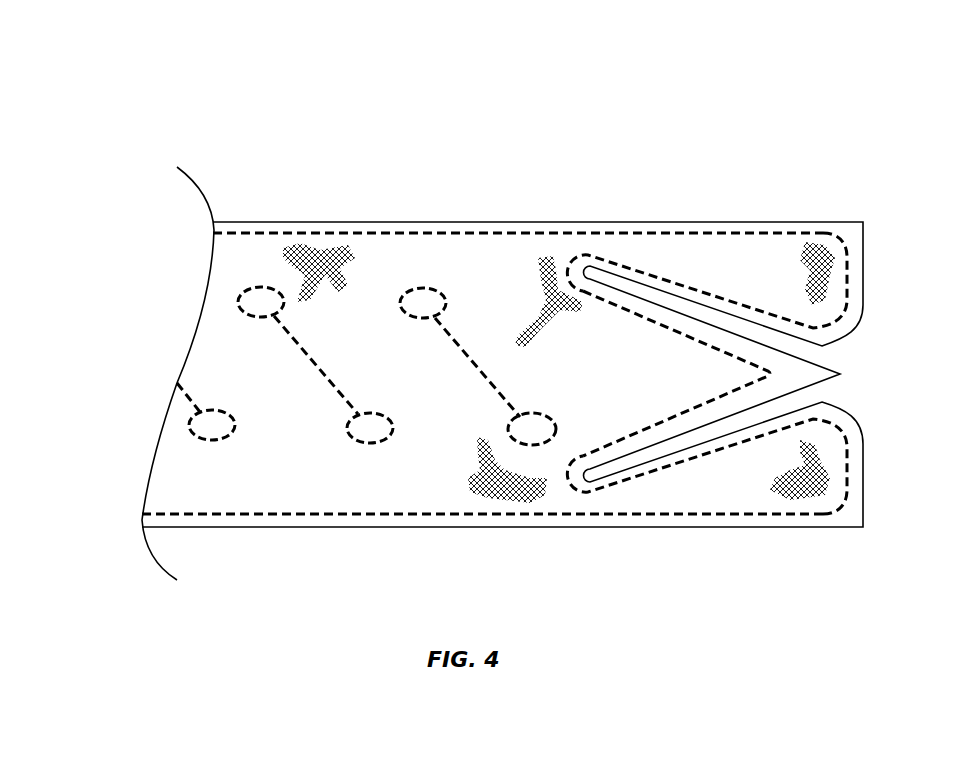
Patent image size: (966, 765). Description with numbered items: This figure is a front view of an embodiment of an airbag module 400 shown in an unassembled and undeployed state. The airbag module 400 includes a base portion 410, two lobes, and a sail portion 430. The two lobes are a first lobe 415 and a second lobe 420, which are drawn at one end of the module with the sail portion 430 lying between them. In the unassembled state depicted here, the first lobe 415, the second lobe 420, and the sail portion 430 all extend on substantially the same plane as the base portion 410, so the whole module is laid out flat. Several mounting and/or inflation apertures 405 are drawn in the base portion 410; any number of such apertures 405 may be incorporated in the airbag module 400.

The airbag module 400 is at (213, 116).
The mounting and/or inflation apertures 405 is at (413, 318).
The base portion 410 is at (396, 222).
The first lobe 415 is at (847, 258).
The second lobe 420 is at (847, 478).
The sail portion 430 is at (772, 373).